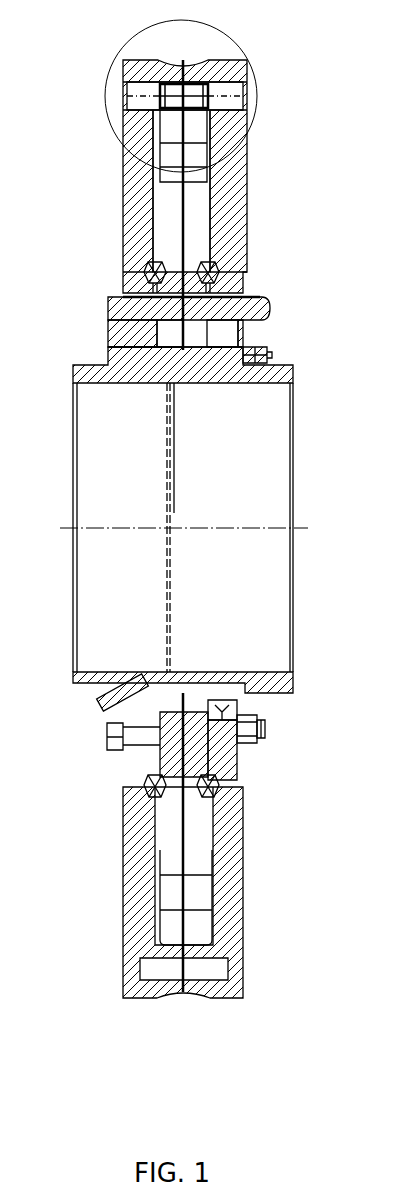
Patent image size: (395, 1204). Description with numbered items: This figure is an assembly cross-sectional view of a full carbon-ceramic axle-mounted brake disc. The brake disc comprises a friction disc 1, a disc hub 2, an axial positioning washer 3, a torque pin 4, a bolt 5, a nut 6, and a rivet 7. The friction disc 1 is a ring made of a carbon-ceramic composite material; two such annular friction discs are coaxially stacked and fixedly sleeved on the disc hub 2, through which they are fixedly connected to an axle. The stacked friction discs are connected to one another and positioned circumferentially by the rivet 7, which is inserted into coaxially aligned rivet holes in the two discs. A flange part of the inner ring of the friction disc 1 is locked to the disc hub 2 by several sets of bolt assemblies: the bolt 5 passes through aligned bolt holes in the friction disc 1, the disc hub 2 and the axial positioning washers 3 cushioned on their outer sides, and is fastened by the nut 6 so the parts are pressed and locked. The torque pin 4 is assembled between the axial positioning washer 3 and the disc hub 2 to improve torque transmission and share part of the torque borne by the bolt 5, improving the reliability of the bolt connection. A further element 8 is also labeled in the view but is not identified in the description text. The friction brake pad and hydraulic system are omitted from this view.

The friction disc 1 is at (300, 50).
The disc hub 2 is at (140, 937).
The axial positioning washer 3 is at (272, 690).
The torque pin 4 is at (150, 775).
The bolt 5 is at (262, 732).
The nut 6 is at (102, 682).
The rivet 7 is at (150, 90).
The connecting block 8 is at (247, 742).